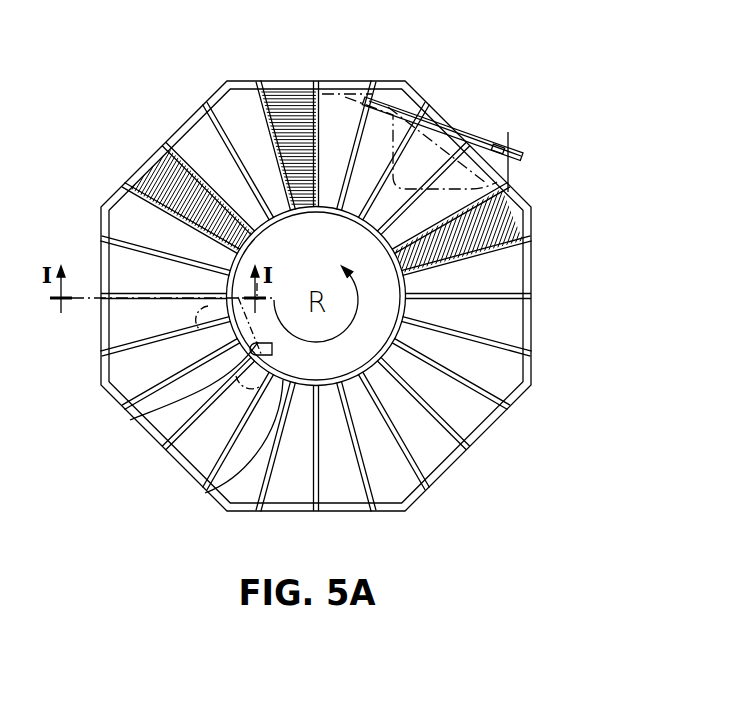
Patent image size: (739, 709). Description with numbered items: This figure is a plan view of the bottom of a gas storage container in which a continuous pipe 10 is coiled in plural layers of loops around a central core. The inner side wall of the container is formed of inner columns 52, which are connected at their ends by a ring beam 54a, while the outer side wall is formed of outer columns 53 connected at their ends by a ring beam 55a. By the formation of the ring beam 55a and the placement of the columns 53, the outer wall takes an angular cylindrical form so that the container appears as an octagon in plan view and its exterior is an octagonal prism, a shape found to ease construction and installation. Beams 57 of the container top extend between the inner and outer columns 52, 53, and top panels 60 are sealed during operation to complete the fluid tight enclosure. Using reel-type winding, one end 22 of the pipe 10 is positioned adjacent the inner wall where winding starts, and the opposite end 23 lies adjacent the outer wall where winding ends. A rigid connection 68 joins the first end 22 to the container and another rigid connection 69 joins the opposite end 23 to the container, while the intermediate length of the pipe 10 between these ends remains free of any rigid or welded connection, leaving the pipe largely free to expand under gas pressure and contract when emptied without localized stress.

The continuous pipe 10 is at (350, 82).
The beams 57 is at (178, 160).
The top panels 60 is at (157, 180).
The opposite end 23 is at (522, 150).
The rigid connection 69 is at (512, 160).
The columns 53 is at (531, 297).
The ring beam 55a is at (531, 325).
The columns 52 is at (518, 412).
The rigid connection 68 is at (227, 323).
The one end 22 is at (230, 395).
The ring beam 54a is at (205, 493).